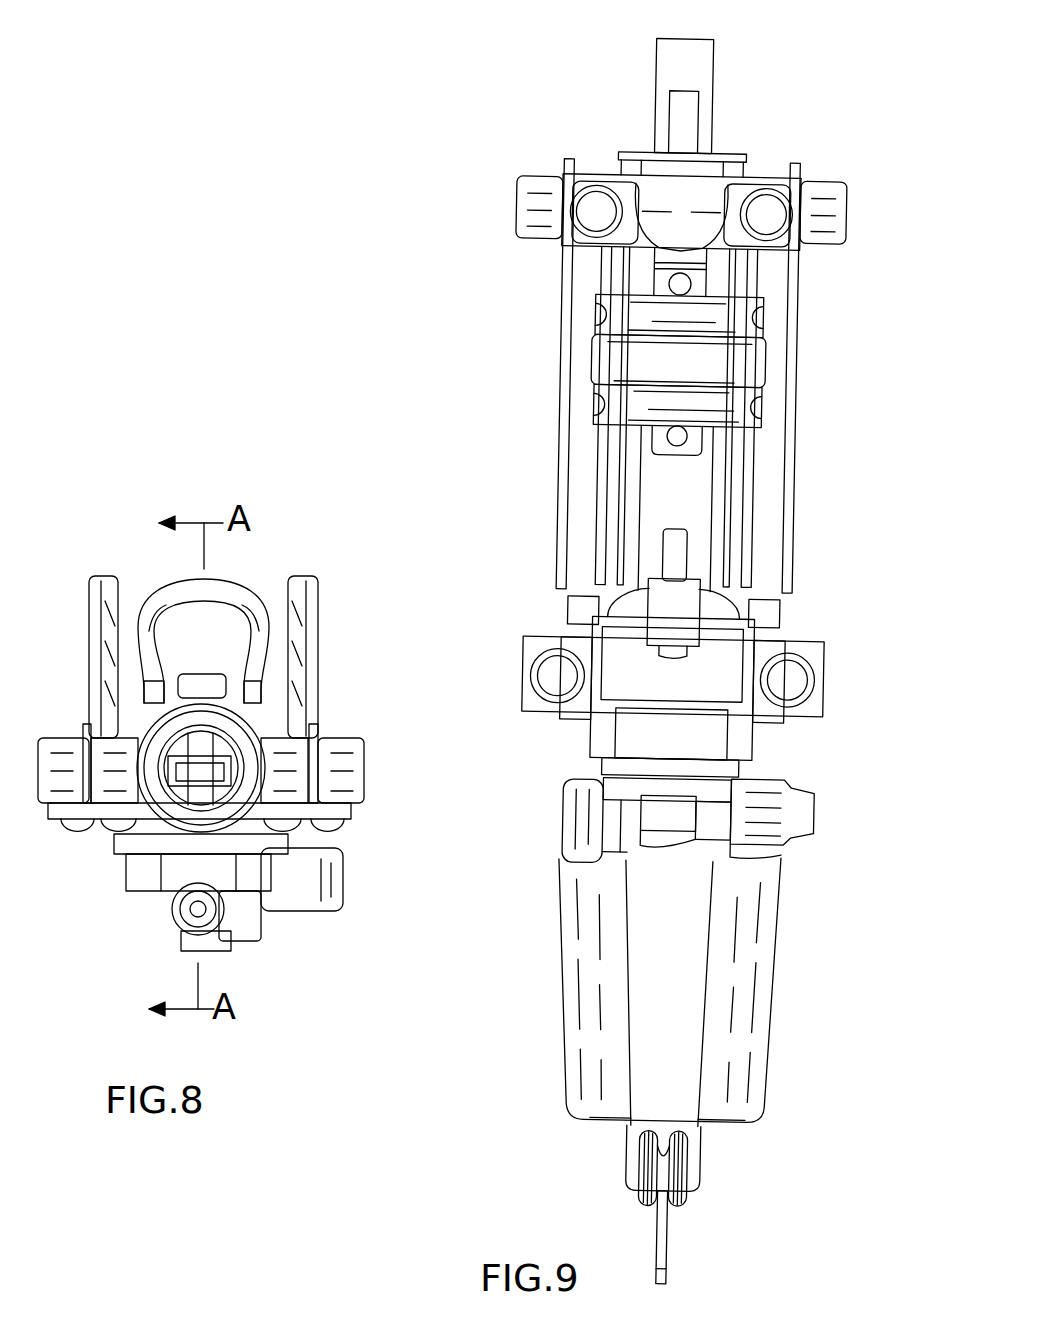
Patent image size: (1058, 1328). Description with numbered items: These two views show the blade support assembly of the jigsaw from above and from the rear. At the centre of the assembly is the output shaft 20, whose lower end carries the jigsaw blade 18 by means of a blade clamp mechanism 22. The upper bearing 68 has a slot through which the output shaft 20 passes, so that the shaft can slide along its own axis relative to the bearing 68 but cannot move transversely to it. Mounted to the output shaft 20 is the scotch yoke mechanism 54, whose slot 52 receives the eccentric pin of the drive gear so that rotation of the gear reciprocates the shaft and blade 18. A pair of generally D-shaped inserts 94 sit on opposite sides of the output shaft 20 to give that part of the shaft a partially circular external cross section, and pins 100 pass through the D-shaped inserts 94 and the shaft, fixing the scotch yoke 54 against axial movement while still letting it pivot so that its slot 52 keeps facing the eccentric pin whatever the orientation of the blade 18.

In FIG. 9, the jigsaw blade 18 is at (662, 1243).
In FIG. 8, the output shaft 20 is at (200, 773).
In FIG. 9, the output shaft 20 is at (665, 67).
In FIG. 8, the blade clamp mechanism 22 is at (160, 597).
In FIG. 9, the slot 52 is at (737, 362).
In FIG. 9, the scotch yoke mechanism 54 is at (618, 318).
In FIG. 9, the upper bearing 68 is at (667, 190).
In FIG. 9, the D-shaped inserts 94 is at (703, 275).
In FIG. 9, the pins 100 is at (667, 282).